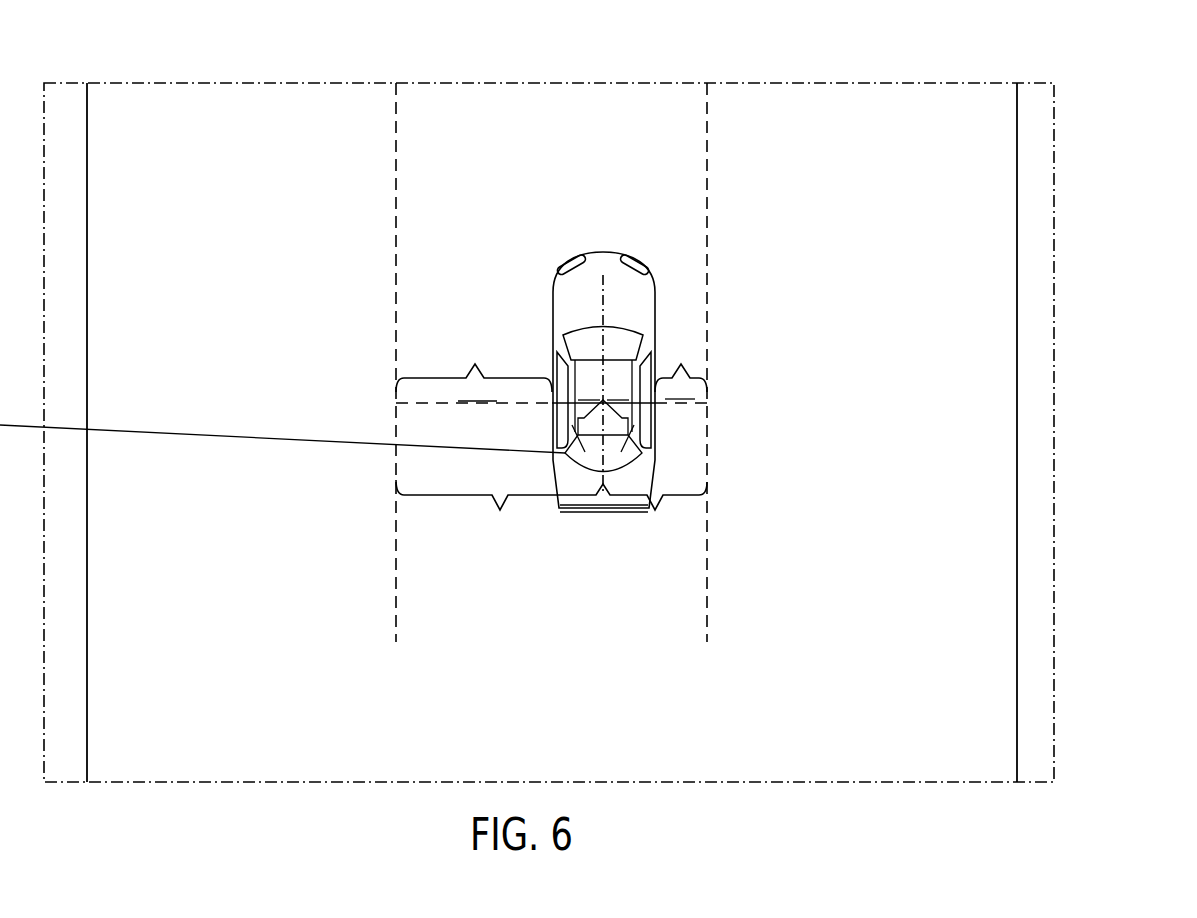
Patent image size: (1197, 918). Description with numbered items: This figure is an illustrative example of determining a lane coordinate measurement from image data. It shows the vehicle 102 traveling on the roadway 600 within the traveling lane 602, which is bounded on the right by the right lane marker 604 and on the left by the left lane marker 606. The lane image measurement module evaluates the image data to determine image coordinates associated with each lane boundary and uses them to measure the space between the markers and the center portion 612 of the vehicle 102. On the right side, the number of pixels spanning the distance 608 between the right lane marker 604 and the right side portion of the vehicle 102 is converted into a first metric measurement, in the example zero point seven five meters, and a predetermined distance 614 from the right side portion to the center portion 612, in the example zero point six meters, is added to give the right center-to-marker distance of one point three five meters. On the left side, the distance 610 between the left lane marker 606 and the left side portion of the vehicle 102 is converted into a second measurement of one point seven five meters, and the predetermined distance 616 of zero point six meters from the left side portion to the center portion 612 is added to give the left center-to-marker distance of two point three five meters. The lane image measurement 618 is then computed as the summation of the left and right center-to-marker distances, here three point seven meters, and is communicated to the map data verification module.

The roadway 600 is at (1050, 71).
The traveling lane 602 is at (583, 172).
The right lane marker 604 is at (707, 338).
The left lane marker 606 is at (396, 363).
The distance between right lane marker and right side portion of vehicle 608 is at (642, 372).
The distance between left lane marker and left side portion of vehicle 610 is at (474, 371).
The center portion of vehicle 612 is at (603, 312).
The distance from right side portion to center portion of vehicle 614 is at (640, 453).
The distance from left side portion to center portion of vehicle 616 is at (568, 453).
The lane image measurement 618 is at (560, 605).
The vehicle 102 is at (655, 284).